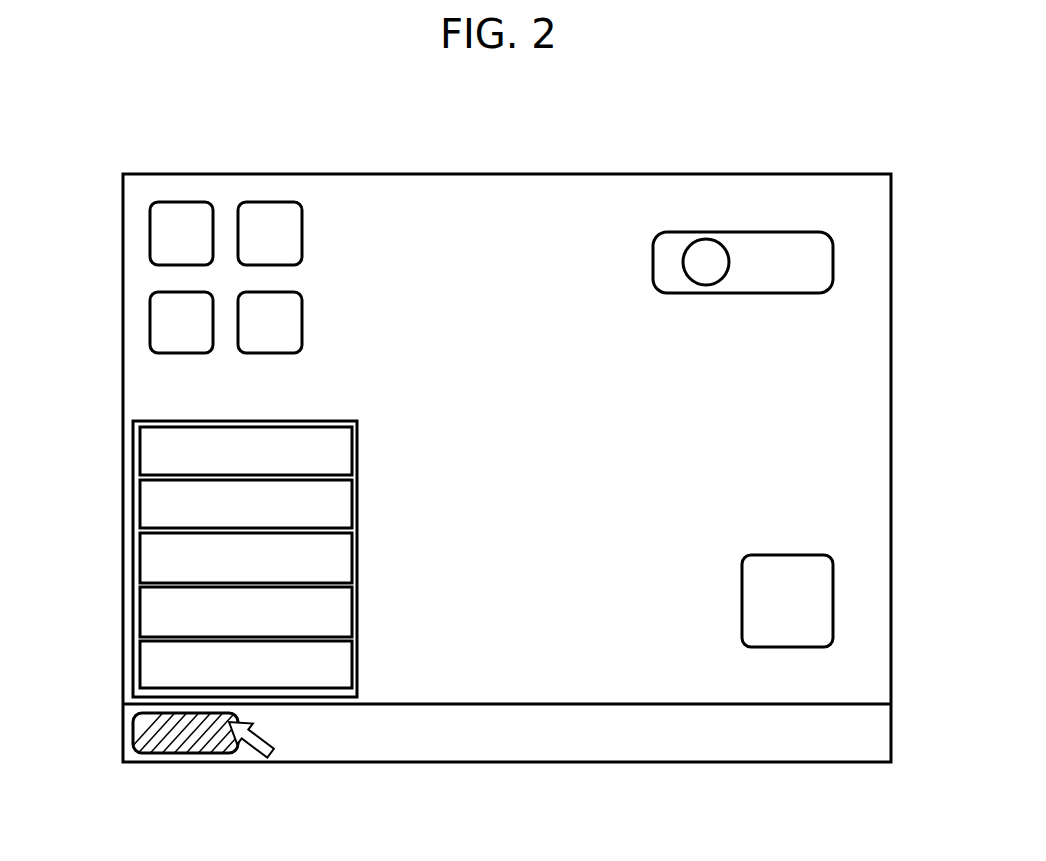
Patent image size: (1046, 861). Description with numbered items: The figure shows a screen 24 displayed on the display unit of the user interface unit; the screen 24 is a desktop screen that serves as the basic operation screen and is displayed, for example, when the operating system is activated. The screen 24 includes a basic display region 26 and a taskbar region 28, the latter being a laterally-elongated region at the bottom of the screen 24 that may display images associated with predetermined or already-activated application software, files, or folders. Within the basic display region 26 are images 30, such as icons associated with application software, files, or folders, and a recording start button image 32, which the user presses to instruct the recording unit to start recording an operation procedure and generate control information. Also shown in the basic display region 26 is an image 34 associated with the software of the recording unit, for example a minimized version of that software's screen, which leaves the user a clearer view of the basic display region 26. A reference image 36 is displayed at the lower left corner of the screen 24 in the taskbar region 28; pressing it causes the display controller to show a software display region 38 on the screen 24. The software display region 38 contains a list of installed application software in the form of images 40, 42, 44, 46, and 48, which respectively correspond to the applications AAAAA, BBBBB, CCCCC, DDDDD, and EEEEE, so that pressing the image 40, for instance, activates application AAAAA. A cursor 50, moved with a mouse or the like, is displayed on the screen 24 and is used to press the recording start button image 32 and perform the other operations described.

The screen 24 is at (376, 173).
The basic display region 26 is at (555, 422).
The taskbar region 28 is at (555, 746).
The images 30 is at (150, 232).
The recording start button image 32 is at (706, 238).
The image 34 is at (833, 600).
The reference image 36 is at (183, 755).
The software display region 38 is at (165, 421).
The image 40 is at (140, 452).
The image 42 is at (140, 505).
The image 44 is at (140, 558).
The image 46 is at (140, 612).
The image 48 is at (140, 666).
The cursor 50 is at (268, 754).